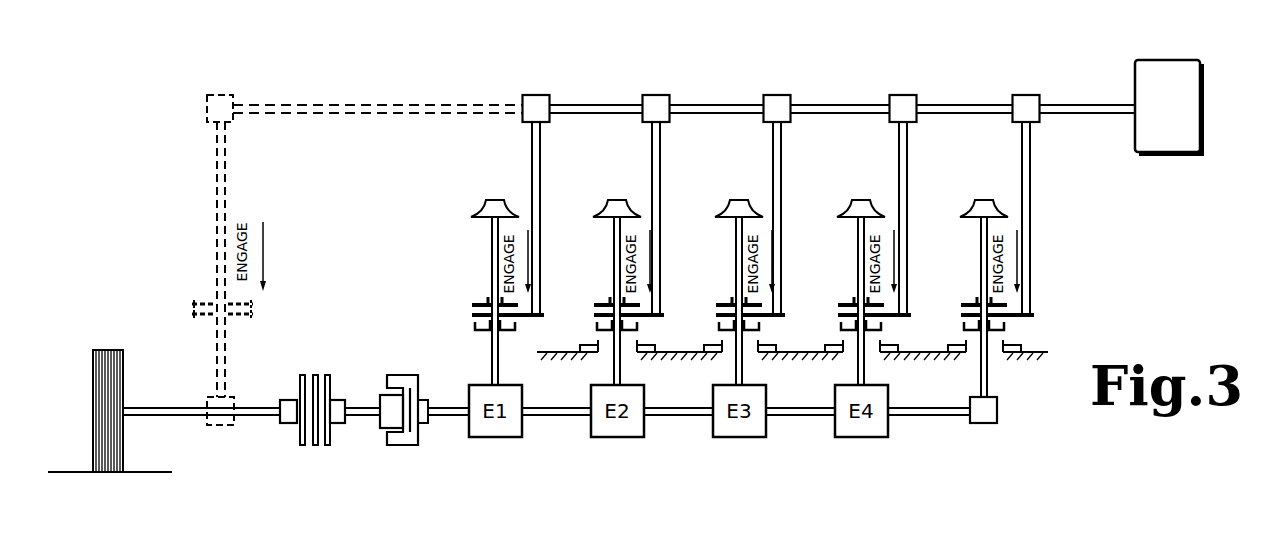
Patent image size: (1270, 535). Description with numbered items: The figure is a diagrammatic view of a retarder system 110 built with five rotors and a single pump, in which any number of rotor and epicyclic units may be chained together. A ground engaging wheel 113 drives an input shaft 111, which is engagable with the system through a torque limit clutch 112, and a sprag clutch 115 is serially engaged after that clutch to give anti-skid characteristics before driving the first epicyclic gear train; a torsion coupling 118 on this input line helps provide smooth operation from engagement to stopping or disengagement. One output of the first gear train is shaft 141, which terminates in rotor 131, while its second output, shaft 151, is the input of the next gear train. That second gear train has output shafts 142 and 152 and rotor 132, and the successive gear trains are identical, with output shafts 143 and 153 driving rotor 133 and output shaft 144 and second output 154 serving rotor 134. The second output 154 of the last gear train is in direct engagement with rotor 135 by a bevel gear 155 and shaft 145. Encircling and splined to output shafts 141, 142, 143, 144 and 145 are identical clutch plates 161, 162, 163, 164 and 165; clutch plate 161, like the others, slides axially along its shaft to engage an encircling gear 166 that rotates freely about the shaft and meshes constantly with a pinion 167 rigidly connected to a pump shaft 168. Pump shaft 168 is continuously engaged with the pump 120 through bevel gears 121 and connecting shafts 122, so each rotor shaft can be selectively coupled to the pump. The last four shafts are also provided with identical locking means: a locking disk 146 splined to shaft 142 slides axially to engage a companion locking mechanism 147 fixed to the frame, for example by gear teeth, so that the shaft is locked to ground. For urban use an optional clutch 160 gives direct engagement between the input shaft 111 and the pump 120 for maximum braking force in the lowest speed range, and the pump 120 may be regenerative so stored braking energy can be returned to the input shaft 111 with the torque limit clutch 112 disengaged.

The retarder system 110 is at (1128, 256).
The input shaft 111 is at (270, 419).
The torque limit clutch 112 is at (344, 425).
The ground engaging wheel 113 is at (120, 350).
The sprag clutch 115 is at (422, 432).
The torsion coupling 118 is at (289, 425).
The pump 120 is at (1203, 105).
The bevel gears 121 is at (535, 96).
The connecting shafts 122 is at (353, 105).
The rotor 131 is at (497, 200).
The rotor 132 is at (619, 200).
The rotor 133 is at (741, 200).
The rotor 134 is at (863, 200).
The rotor 135 is at (986, 200).
The output shaft 141 is at (491, 377).
The output shaft 142 is at (613, 377).
The output shaft 143 is at (735, 377).
The output shaft 144 is at (857, 377).
The shaft 145 is at (980, 377).
The locking disk 146 is at (593, 327).
The locking mechanism 147 is at (591, 347).
The shaft 151 is at (568, 418).
The output shaft 152 is at (690, 418).
The output shaft 153 is at (812, 418).
The second output 154 is at (935, 418).
The bevel gear 155 is at (998, 410).
The clutch 160 is at (194, 299).
The clutch plate 161 is at (471, 301).
The clutch plate 162 is at (593, 301).
The clutch plate 163 is at (715, 301).
The clutch plate 164 is at (837, 301).
The clutch plate 165 is at (960, 301).
The encircling gear 166 is at (476, 318).
The pinion 167 is at (548, 318).
The pump shaft 168 is at (541, 229).